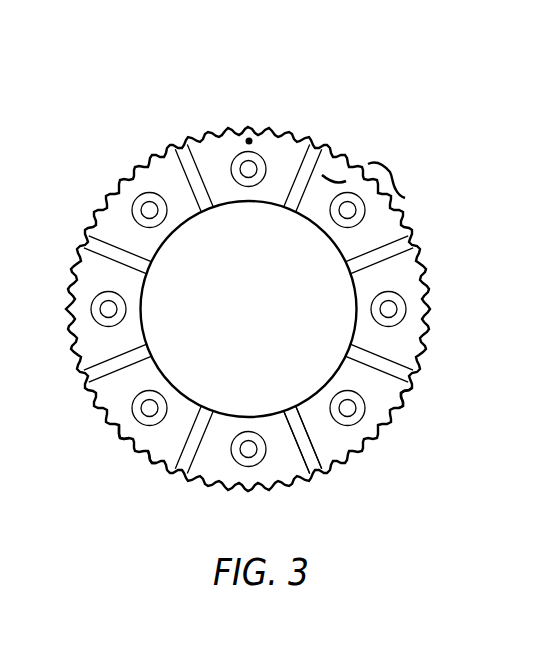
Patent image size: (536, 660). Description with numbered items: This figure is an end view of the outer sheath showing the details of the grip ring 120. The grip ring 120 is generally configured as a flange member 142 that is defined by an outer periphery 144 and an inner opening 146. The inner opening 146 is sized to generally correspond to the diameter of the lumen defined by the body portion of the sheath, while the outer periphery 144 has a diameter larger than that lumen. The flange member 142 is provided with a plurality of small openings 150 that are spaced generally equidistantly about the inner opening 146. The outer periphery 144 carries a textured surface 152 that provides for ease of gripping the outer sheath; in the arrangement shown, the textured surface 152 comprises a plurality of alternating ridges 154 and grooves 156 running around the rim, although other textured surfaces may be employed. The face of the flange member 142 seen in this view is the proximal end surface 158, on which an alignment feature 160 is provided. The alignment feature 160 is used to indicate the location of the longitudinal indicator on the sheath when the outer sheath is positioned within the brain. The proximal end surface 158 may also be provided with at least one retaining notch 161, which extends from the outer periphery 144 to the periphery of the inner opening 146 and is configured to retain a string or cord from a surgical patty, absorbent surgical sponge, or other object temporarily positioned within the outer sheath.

The grip ring 120 is at (307, 120).
The flange member 142 is at (285, 457).
The outer periphery 144 is at (412, 400).
The inner opening 146 is at (267, 313).
The small openings 150 is at (390, 309).
The textured surface 152 is at (401, 173).
The ridges 154 is at (132, 450).
The grooves 156 is at (162, 467).
The proximal end surface 158 is at (337, 175).
The alignment feature 160 is at (249, 138).
The retaining notch 161 is at (113, 370).